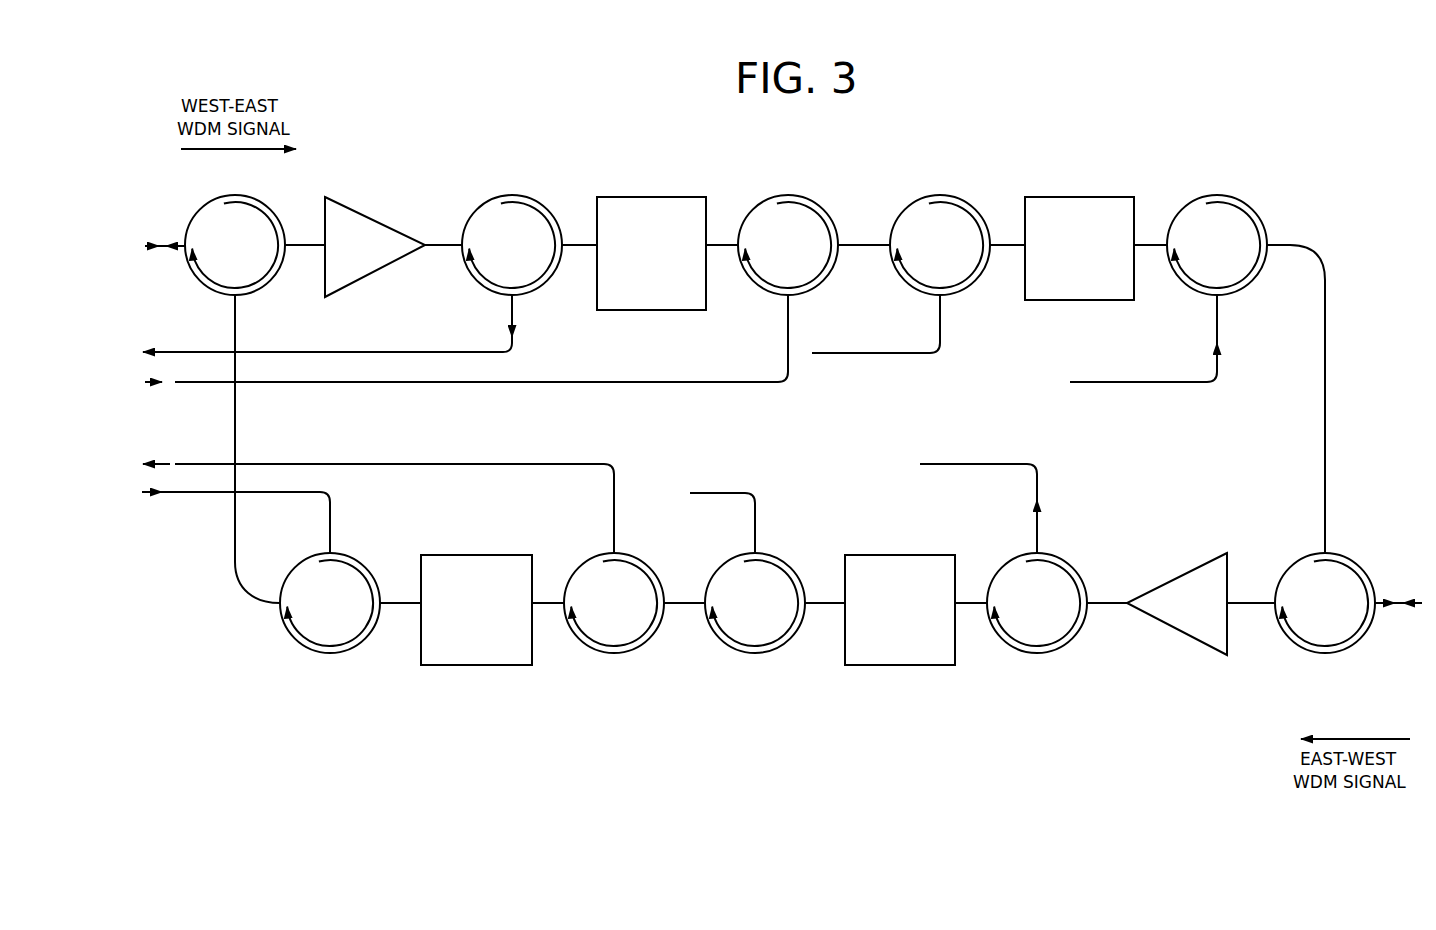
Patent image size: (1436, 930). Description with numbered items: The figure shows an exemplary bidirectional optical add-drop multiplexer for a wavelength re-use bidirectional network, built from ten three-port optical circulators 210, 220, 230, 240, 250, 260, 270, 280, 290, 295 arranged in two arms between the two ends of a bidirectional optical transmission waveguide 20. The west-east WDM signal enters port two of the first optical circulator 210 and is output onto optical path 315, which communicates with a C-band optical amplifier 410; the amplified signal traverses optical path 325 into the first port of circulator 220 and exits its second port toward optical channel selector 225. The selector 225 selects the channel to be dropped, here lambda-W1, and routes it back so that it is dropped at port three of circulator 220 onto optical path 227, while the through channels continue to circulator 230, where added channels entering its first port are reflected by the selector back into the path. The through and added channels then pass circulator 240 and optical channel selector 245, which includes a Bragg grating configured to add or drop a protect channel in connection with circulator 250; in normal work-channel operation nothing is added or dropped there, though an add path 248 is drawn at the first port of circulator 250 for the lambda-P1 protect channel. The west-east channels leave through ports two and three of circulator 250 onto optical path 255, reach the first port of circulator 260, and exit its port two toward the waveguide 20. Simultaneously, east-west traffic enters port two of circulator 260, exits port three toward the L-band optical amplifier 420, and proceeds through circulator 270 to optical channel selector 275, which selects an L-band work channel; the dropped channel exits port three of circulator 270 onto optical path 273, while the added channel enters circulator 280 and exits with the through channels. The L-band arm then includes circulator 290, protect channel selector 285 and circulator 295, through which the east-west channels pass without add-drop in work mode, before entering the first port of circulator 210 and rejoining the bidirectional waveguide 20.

The bidirectional optical transmission waveguide 20 is at (146, 246).
The first optical circulator 210 is at (247, 198).
The optical circulator 220 is at (520, 198).
The optical circulator 230 is at (788, 196).
The optical circulator 240 is at (936, 196).
The optical circulator 250 is at (1227, 195).
The optical circulator 260 is at (1301, 648).
The optical circulator 270 is at (1036, 655).
The optical circulator 280 is at (756, 655).
The optical circulator 290 is at (603, 655).
The optical circulator 295 is at (310, 653).
The optical channel selector 225 is at (642, 198).
The optical channel selector 245 is at (1100, 198).
The optical channel selector 275 is at (903, 665).
The optical channel selector 285 is at (462, 665).
The optical amplifier 410 is at (365, 220).
The optical amplifier 420 is at (1173, 633).
The optical path 315 is at (310, 248).
The optical path 325 is at (440, 248).
The optical path 227 is at (334, 353).
The add path 248 is at (1123, 383).
The optical path 255 is at (1329, 316).
The optical path 273 is at (955, 464).